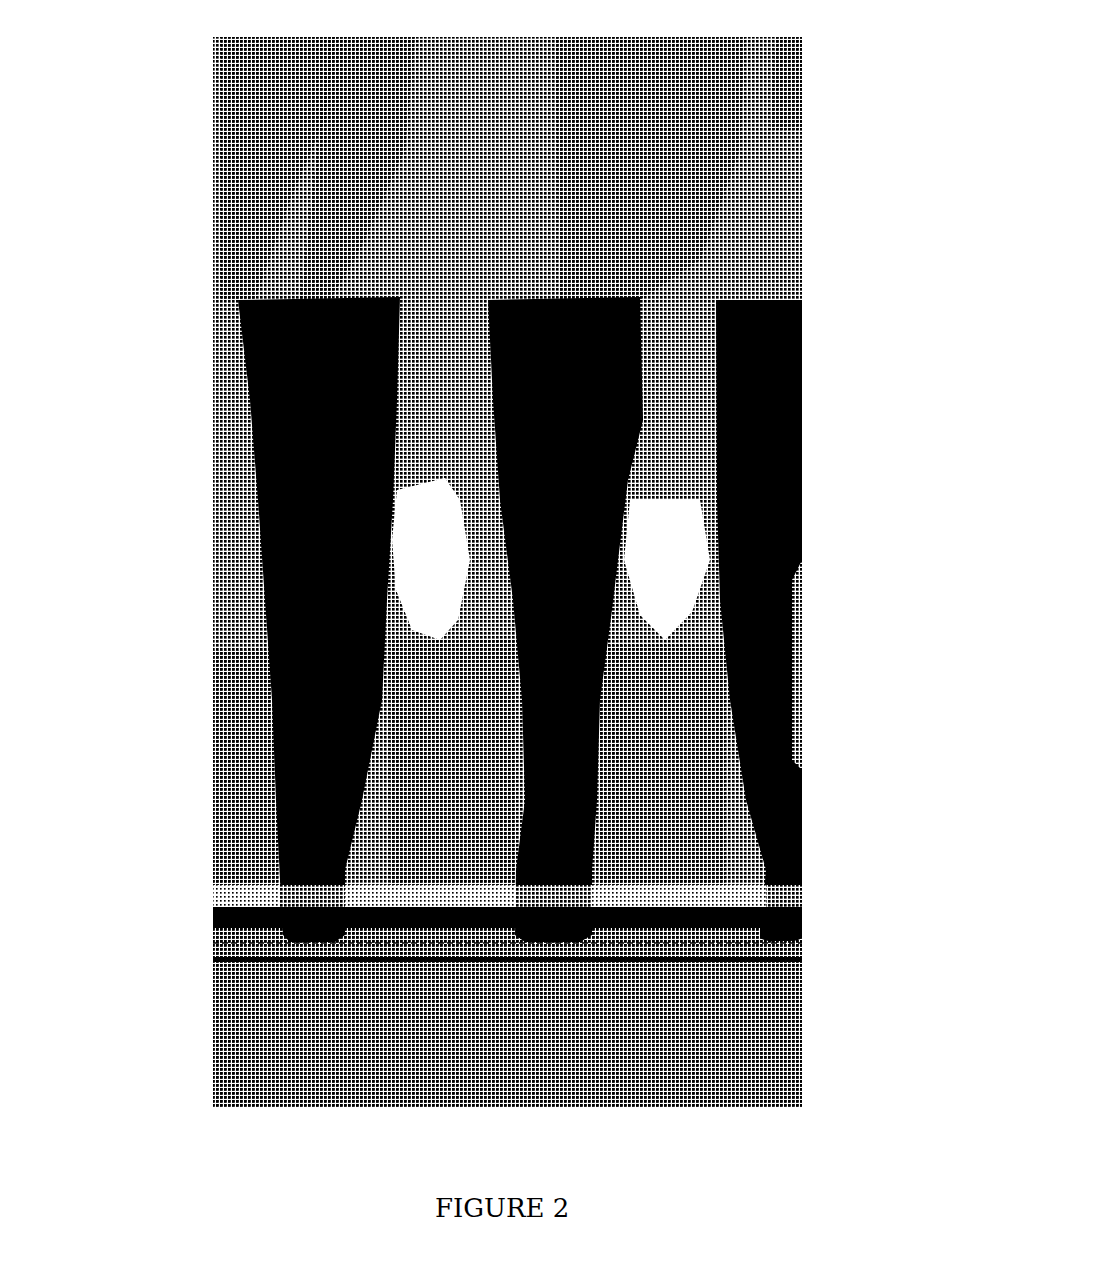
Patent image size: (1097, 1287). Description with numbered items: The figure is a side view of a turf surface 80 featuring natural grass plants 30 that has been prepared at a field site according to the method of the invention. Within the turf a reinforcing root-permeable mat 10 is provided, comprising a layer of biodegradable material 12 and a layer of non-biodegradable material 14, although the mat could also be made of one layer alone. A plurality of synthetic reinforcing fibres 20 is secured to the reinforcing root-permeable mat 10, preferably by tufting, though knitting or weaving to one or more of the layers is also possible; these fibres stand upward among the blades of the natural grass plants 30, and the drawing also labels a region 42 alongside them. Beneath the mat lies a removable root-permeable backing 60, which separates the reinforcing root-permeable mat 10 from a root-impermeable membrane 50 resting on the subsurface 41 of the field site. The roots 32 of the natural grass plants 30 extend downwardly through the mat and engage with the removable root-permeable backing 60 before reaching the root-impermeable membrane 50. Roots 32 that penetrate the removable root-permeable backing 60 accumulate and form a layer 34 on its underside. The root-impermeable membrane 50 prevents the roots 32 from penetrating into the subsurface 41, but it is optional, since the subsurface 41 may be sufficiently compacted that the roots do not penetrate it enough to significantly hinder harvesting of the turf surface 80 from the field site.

The turf surface 80 is at (850, 68).
The natural grass plants 30 is at (240, 220).
The synthetic reinforcing fibres 20 is at (257, 400).
The side region of fiber layer 42 is at (238, 588).
The roots 32 is at (710, 803).
The reinforcing root-permeable mat 10 is at (213, 895).
The layer of biodegradable material 12 is at (795, 897).
The layer of non-biodegradable material 14 is at (800, 930).
The removable root-permeable backing 60 is at (213, 940).
The layer 34 is at (752, 953).
The root-impermeable membrane 50 is at (703, 960).
The subsurface 41 is at (233, 1047).